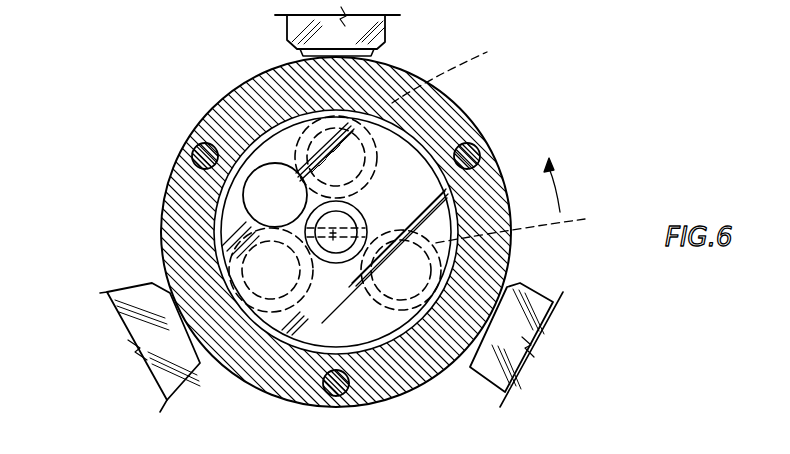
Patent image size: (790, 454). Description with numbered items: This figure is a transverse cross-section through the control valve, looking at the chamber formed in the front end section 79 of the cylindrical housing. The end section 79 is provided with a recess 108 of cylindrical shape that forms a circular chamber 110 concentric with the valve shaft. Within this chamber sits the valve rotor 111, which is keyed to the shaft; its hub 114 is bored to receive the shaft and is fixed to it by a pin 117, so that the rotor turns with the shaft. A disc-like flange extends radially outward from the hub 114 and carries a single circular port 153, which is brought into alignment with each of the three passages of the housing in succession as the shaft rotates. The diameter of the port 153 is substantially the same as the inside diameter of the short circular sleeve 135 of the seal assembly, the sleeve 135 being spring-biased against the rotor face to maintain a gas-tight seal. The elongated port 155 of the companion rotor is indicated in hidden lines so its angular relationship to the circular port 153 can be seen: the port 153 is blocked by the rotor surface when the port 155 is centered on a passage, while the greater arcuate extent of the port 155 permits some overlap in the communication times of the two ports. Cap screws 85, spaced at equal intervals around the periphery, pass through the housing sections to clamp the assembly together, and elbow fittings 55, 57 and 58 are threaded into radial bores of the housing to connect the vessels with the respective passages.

The elbow fitting 55 is at (387, 31).
The elbow fitting 57 is at (540, 292).
The elbow fitting 58 is at (148, 284).
The end section 79 is at (183, 152).
The cap screws 85 is at (196, 146).
The recess 108 is at (282, 327).
The chamber 110 is at (390, 157).
The valve rotor 111 is at (390, 138).
The hub 114 is at (348, 212).
The pin 117 is at (335, 242).
The sleeve 135 is at (459, 70).
The circular port 153 is at (262, 165).
The port 155 is at (474, 240).